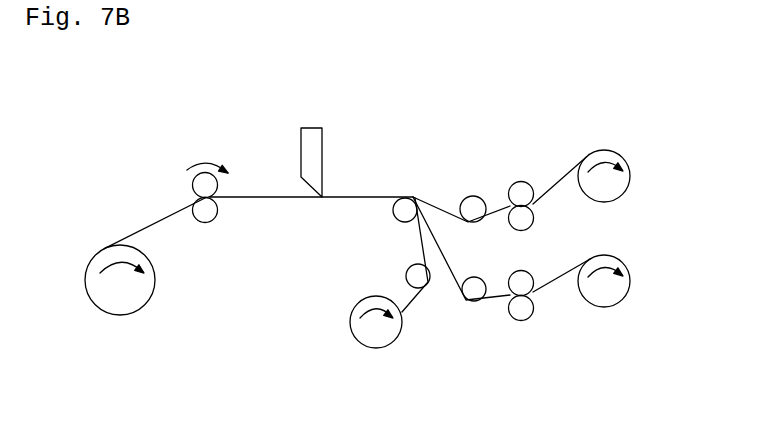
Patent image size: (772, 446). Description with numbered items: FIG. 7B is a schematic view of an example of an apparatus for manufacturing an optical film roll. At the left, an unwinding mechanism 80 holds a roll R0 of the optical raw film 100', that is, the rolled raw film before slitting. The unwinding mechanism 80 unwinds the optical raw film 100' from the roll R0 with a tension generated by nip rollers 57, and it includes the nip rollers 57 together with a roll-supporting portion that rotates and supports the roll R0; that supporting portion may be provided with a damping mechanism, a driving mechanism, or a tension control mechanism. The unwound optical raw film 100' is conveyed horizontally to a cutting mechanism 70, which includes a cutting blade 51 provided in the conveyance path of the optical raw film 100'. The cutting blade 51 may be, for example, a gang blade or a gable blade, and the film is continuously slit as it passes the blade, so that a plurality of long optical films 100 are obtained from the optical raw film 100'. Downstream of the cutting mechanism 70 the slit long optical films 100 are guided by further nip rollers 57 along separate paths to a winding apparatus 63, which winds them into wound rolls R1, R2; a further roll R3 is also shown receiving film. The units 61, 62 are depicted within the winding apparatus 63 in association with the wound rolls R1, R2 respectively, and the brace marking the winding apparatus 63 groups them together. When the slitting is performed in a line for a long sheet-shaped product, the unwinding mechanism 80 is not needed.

The cutting mechanism 70 is at (316, 115).
The cutting blade 51 is at (307, 112).
The nip rollers 57 is at (207, 225).
The optical raw film 100' is at (154, 204).
The long optical film 100 is at (517, 234).
The roll of the optical raw film R0 is at (88, 267).
The wound roll R1 is at (607, 150).
The wound roll R2 is at (602, 307).
The third take-up roll R3 is at (378, 360).
The first winding unit 61 is at (642, 163).
The second winding unit 62 is at (642, 296).
The winding apparatus 63 is at (668, 233).
The unwinding mechanism 80 is at (134, 301).